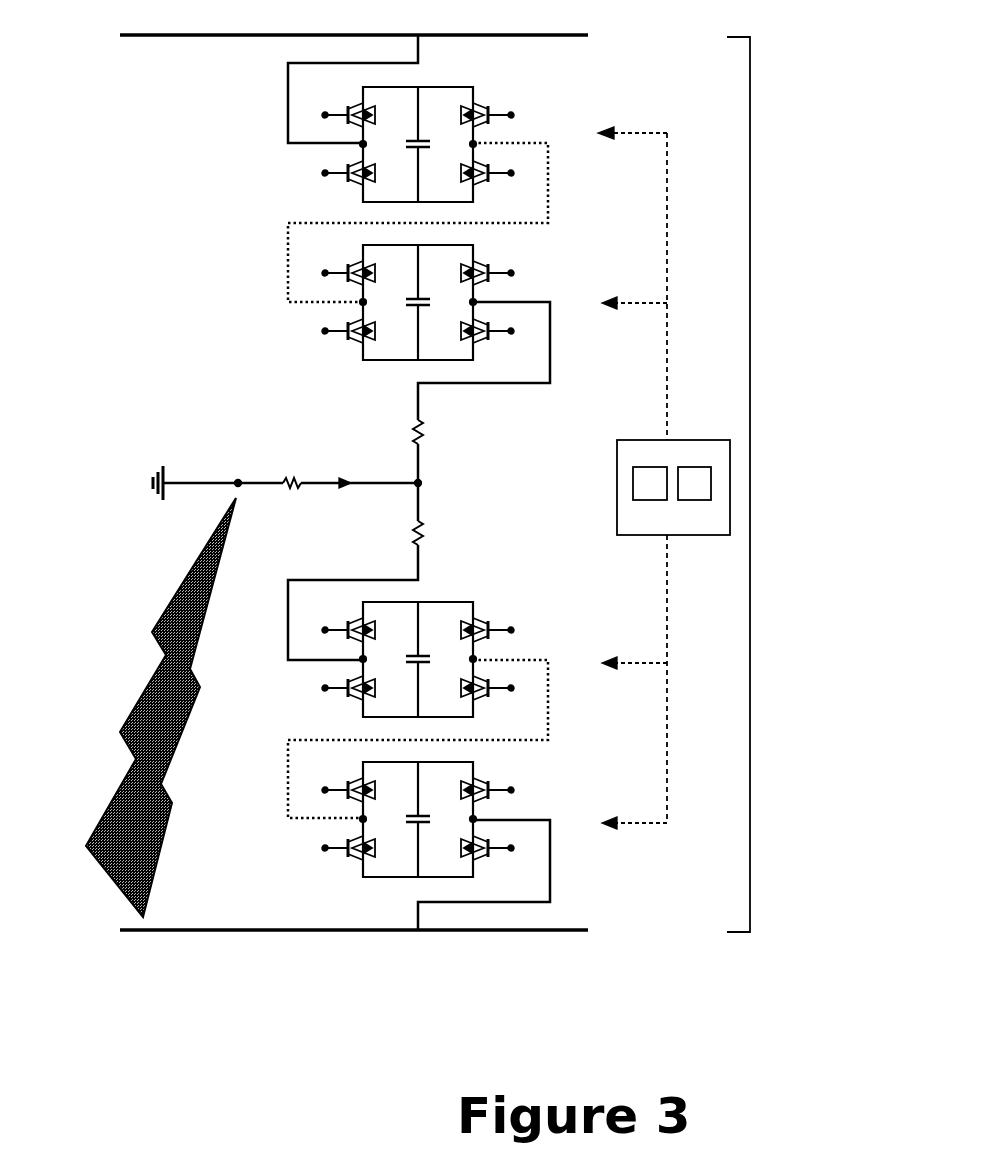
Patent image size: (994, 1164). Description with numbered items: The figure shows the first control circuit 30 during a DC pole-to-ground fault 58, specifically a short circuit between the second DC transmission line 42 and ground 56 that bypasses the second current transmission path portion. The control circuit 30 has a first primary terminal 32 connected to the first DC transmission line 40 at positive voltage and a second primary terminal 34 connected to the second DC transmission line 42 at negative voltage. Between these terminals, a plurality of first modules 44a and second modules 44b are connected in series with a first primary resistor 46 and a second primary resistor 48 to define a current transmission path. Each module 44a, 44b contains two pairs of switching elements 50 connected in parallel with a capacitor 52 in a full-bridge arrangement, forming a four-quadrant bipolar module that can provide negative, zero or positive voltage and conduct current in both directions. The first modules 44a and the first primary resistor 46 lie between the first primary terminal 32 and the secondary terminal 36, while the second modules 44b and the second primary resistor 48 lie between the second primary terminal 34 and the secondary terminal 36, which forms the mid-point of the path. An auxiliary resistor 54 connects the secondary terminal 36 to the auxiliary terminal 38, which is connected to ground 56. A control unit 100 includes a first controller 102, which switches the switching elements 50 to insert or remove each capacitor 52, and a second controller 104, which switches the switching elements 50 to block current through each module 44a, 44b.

The control circuit 30 is at (750, 487).
The first primary terminal 32 is at (430, 43).
The second primary terminal 34 is at (405, 920).
The secondary terminal 36 is at (410, 495).
The auxiliary terminal 38 is at (245, 475).
The first DC transmission line 40 is at (512, 28).
The second DC transmission line 42 is at (540, 937).
The first modules 44a is at (377, 152).
The second modules 44b is at (377, 667).
The first primary resistor 46 is at (440, 437).
The second primary resistor 48 is at (440, 535).
The switching elements 50 is at (387, 262).
The capacitor 52 is at (415, 320).
The auxiliary resistor 54 is at (290, 500).
The ground 56 is at (155, 470).
The DC pole-to-ground fault 58 is at (143, 684).
The control unit 100 is at (693, 518).
The first controller 102 is at (647, 482).
The second controller 104 is at (698, 485).